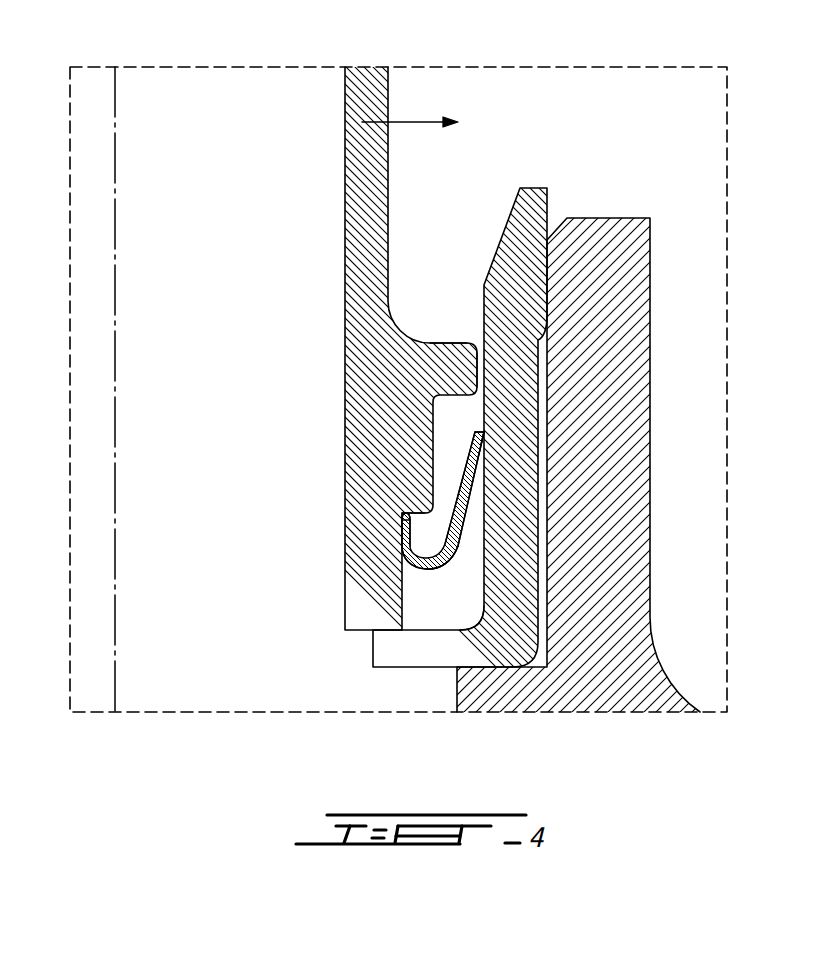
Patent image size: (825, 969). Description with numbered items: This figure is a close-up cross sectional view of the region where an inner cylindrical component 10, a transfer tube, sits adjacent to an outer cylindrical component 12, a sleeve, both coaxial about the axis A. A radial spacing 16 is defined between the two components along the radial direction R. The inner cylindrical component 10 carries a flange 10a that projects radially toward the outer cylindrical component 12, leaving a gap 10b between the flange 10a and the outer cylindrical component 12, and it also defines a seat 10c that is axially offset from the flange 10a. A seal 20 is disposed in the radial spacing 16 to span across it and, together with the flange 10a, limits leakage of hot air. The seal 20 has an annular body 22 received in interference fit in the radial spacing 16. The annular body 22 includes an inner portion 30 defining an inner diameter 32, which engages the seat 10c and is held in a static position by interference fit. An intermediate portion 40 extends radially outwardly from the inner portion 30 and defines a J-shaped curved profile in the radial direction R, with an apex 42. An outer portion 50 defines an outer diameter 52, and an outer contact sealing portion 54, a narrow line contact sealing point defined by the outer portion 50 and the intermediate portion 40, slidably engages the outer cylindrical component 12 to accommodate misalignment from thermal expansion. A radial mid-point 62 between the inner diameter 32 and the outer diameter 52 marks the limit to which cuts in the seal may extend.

The inner cylindrical component 10 is at (363, 157).
The flange 10a is at (458, 346).
The gap 10b is at (477, 350).
The seat 10c is at (400, 503).
The outer cylindrical component 12 is at (530, 197).
The radial spacing 16 is at (467, 583).
The seal 20 is at (465, 528).
The annular body 22 is at (484, 586).
The inner portion 30 is at (410, 565).
The inner diameter 32 is at (402, 515).
The intermediate portion 40 is at (473, 512).
The apex 42 is at (430, 572).
The outer portion 50 is at (487, 467).
The outer diameter 52 is at (487, 447).
The outer contact sealing portion 54 is at (481, 433).
The radial mid-point 62 is at (460, 545).
The axis A is at (117, 167).
The radial direction R is at (412, 122).